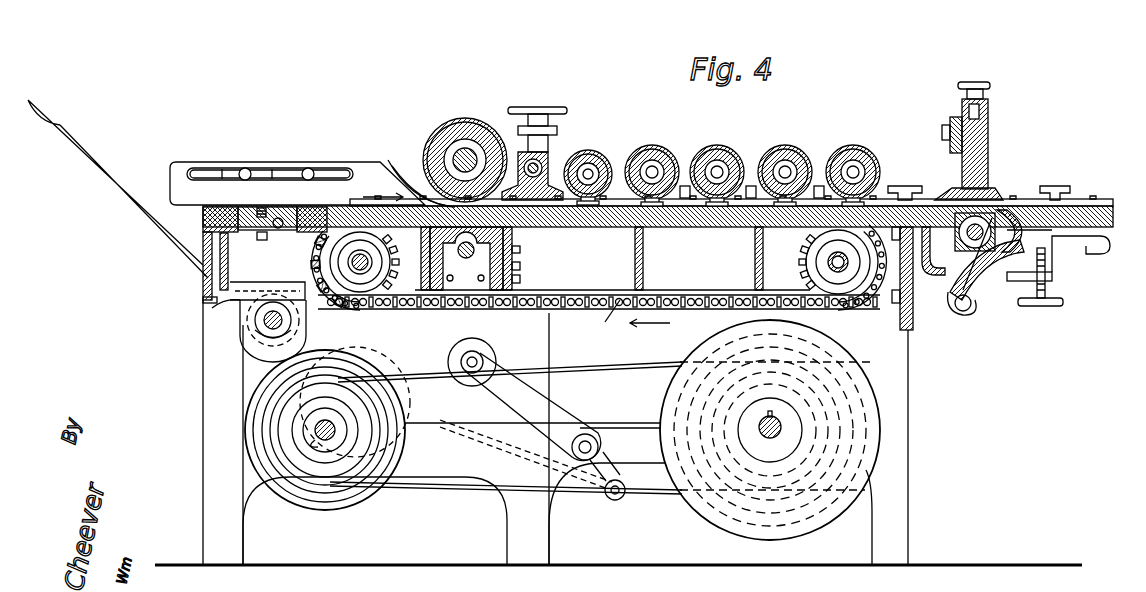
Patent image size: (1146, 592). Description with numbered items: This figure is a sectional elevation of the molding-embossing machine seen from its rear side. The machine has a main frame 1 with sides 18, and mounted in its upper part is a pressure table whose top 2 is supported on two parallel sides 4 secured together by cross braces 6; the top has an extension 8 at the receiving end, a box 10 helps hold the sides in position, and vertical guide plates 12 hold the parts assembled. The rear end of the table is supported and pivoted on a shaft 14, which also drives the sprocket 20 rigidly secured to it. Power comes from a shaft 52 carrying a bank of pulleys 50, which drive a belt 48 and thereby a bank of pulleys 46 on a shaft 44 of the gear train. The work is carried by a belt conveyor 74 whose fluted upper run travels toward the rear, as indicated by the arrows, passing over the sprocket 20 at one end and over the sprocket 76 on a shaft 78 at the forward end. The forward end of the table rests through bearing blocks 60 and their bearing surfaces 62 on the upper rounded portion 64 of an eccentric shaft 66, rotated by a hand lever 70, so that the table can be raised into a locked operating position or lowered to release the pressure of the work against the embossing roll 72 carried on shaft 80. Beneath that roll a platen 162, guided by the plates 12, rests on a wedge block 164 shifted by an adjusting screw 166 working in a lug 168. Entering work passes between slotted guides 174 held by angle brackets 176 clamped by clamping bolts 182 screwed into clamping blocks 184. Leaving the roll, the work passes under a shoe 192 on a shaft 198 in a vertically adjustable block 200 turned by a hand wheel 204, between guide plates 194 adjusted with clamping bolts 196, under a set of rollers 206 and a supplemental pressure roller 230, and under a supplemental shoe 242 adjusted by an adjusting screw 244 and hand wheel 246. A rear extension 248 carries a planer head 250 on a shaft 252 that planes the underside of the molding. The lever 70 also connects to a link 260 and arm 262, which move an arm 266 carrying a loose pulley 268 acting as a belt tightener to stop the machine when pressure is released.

The main frame 1 is at (910, 340).
The top 2 is at (625, 228).
The sides 4 is at (607, 319).
The cross braces 6 is at (207, 248).
The extension 8 is at (355, 212).
The box 10 is at (433, 300).
The vertical guide plates 12 is at (420, 282).
The shaft 14 is at (834, 260).
The sides 18 is at (212, 300).
The sprocket 20 is at (802, 247).
The shaft 44 is at (770, 431).
The pulleys 46 is at (740, 520).
The belt 48 is at (580, 494).
The pulleys 50 is at (365, 492).
The shaft 52 is at (322, 438).
The bearing blocks 60 is at (240, 303).
The bearing surfaces 62 is at (300, 308).
The upper rounded portion 64 is at (258, 318).
The eccentric shaft 66 is at (266, 328).
The hand lever 70 is at (152, 218).
The embossing roll 72 is at (462, 130).
The belt conveyor 74 is at (718, 208).
The sprocket 76 is at (367, 282).
The shaft 78 is at (360, 258).
The shaft 80 is at (440, 158).
The platen 162 is at (395, 170).
The wedge block 164 is at (517, 233).
The adjusting screw 166 is at (513, 266).
The lug 168 is at (478, 265).
The guides 174 is at (282, 153).
The angle brackets 176 is at (238, 169).
The clamping bolts 182 is at (232, 262).
The clamping blocks 184 is at (280, 231).
The shoe 192 is at (555, 170).
The guide plates 194 is at (703, 207).
The clamping bolts 196 is at (688, 186).
The shaft 198 is at (548, 160).
The block 200 is at (594, 158).
The hand wheel 204 is at (545, 103).
The rollers 206 is at (649, 158).
The supplemental pressure roller 230 is at (855, 150).
The supplemental shoe 242 is at (985, 200).
The adjusting screw 244 is at (962, 112).
The hand wheel 246 is at (974, 82).
The extension 248 is at (977, 303).
The planer head 250 is at (996, 218).
The shaft 252 is at (1047, 258).
The link 260 is at (435, 420).
The arm 262 is at (625, 476).
The arm 266 is at (560, 420).
The loose pulley 268 is at (472, 340).